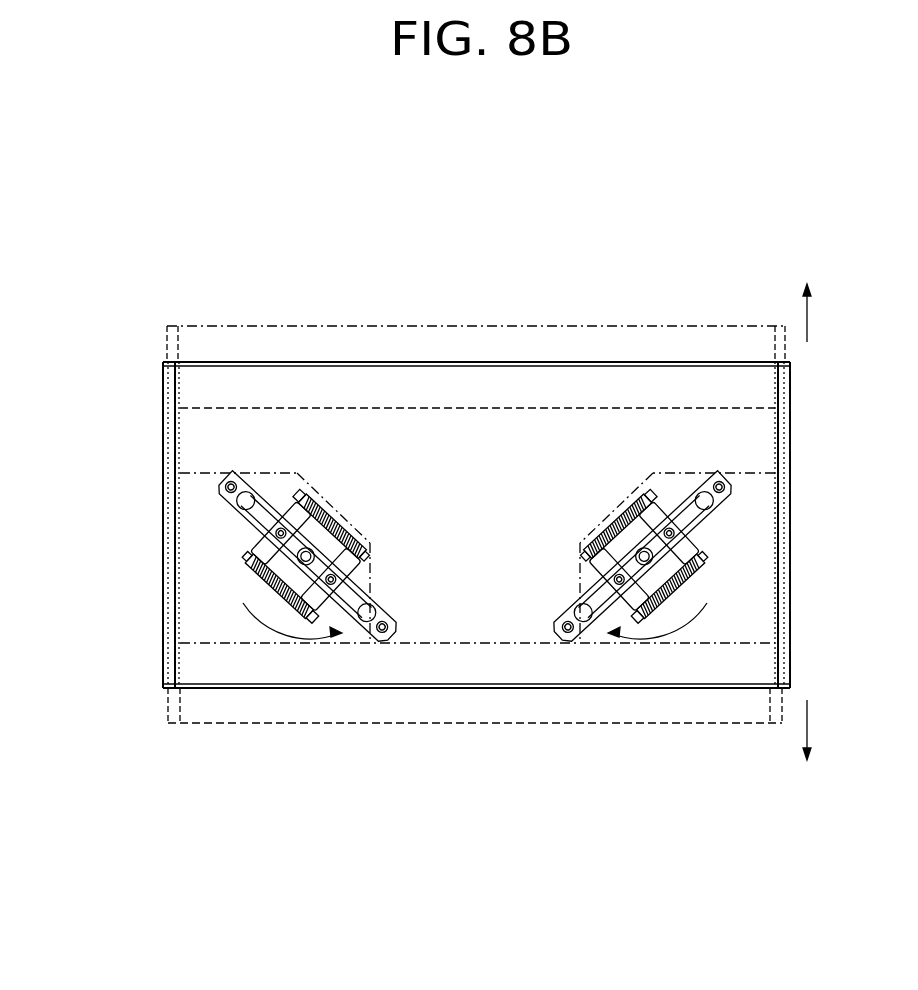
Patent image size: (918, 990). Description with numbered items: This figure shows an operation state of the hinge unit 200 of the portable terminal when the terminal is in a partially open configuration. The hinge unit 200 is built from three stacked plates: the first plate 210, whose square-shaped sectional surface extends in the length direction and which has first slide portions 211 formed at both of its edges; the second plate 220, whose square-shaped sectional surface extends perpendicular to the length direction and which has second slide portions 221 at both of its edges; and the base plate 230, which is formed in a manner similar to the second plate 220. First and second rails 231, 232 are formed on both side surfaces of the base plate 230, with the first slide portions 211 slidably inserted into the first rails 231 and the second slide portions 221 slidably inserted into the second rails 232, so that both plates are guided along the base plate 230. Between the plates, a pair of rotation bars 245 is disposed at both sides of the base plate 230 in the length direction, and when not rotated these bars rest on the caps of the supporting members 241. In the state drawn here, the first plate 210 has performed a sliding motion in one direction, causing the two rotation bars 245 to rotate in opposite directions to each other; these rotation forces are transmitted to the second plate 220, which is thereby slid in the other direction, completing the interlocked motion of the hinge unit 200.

The hinge unit 200 is at (437, 498).
The first plate 210 is at (220, 330).
The first slide portions 211 is at (168, 325).
The second plate 220 is at (238, 718).
The second slide portions 221 is at (175, 726).
The base plate 230 is at (201, 377).
The first rails 231 is at (165, 395).
The second rails 232 is at (424, 516).
The supporting members 241 is at (278, 588).
The rotation bars 245 is at (243, 543).